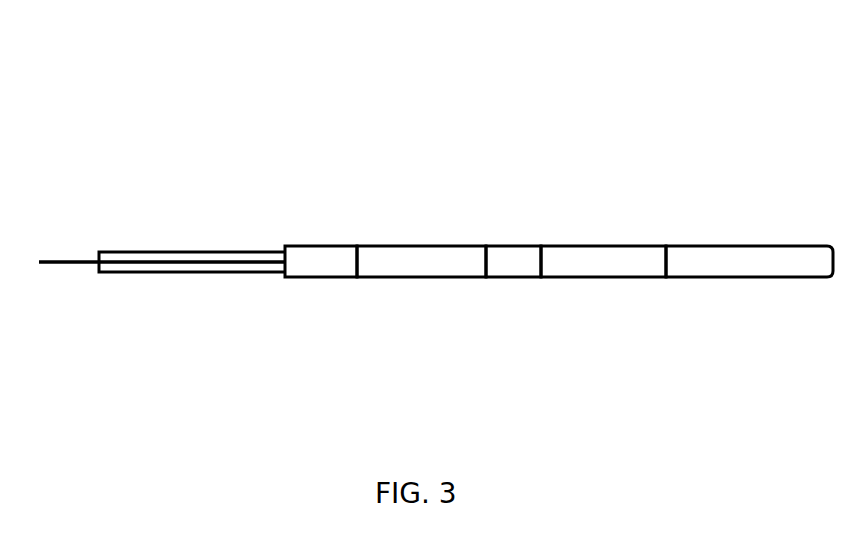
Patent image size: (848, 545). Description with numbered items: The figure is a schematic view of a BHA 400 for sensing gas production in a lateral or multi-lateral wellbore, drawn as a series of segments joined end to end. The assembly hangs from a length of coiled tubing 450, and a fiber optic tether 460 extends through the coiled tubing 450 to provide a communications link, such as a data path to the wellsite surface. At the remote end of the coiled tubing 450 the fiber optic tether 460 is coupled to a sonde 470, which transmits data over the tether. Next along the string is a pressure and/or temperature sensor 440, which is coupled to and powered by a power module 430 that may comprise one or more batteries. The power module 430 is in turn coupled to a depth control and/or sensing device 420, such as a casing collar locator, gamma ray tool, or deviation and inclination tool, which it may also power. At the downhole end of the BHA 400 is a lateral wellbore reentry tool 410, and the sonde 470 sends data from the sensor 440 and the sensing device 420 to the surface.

The BHA 400 is at (544, 99).
The lateral wellbore reentry tool 410 is at (752, 245).
The depth control and/or sensing device 420 is at (615, 245).
The power module 430 is at (515, 245).
The pressure and/or temperature sensor 440 is at (408, 245).
The coiled tubing 450 is at (188, 250).
The fiber optic tether 460 is at (65, 264).
The sonde 470 is at (332, 245).